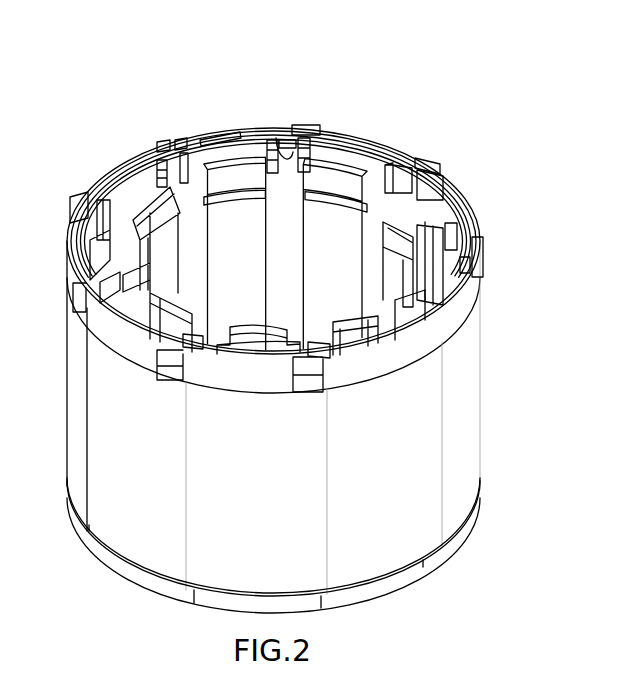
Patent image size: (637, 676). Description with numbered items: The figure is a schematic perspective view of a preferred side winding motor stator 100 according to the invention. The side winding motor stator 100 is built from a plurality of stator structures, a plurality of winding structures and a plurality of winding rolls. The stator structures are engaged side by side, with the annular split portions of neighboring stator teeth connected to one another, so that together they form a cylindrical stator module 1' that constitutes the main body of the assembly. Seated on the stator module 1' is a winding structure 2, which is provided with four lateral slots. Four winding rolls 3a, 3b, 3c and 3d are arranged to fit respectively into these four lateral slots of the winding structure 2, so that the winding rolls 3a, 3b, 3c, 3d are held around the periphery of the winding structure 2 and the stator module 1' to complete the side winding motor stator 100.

The side winding motor stator 100 is at (102, 126).
The stator module 1' is at (247, 427).
The winding structure 2 is at (66, 199).
The winding roll 3a is at (223, 136).
The winding roll 3b is at (272, 140).
The winding roll 3c is at (276, 138).
The winding roll 3d is at (293, 130).